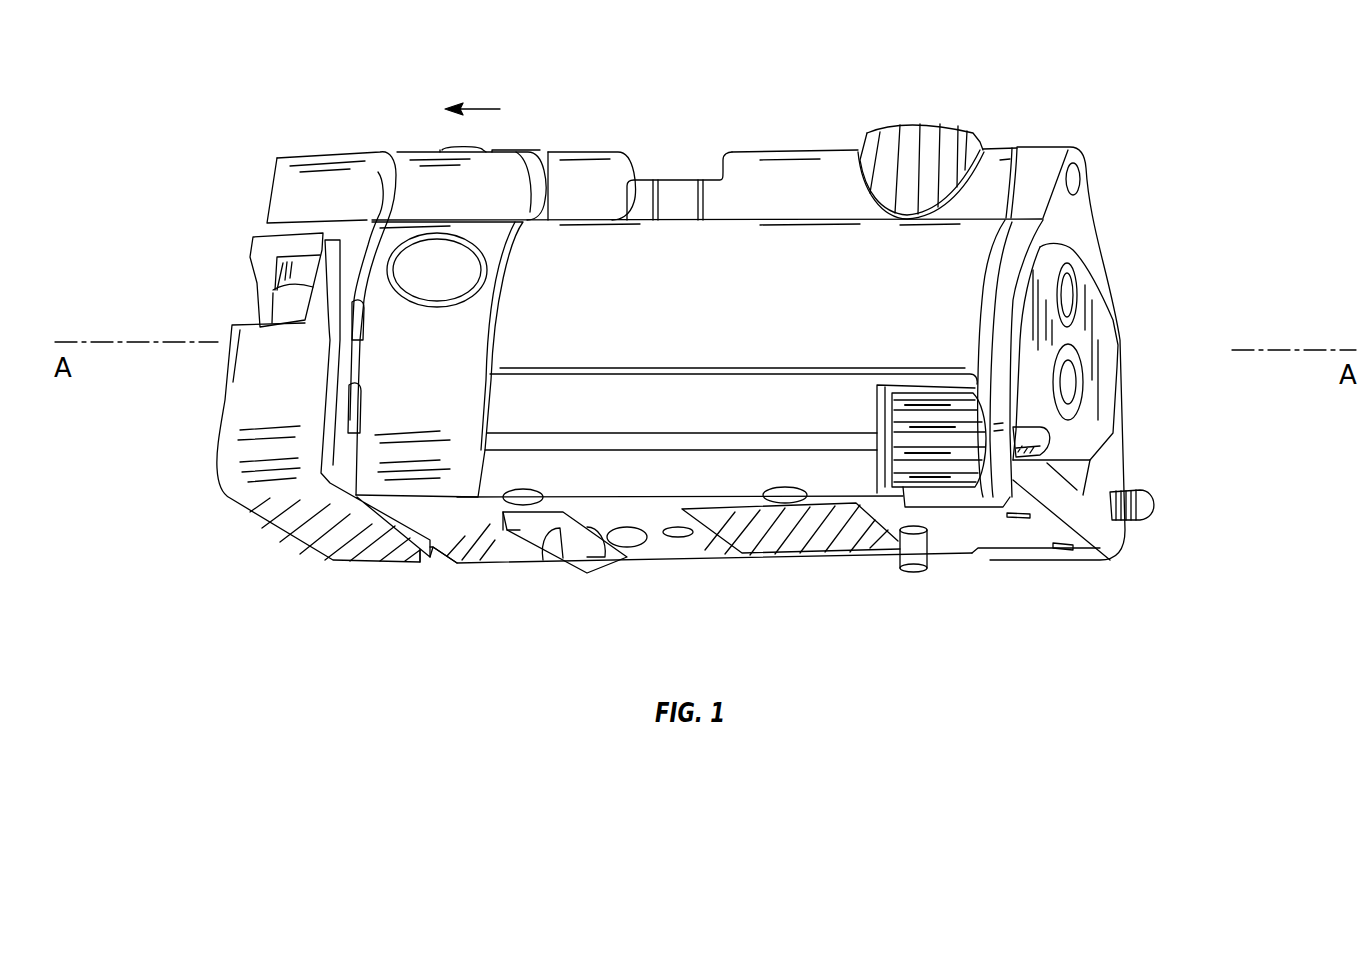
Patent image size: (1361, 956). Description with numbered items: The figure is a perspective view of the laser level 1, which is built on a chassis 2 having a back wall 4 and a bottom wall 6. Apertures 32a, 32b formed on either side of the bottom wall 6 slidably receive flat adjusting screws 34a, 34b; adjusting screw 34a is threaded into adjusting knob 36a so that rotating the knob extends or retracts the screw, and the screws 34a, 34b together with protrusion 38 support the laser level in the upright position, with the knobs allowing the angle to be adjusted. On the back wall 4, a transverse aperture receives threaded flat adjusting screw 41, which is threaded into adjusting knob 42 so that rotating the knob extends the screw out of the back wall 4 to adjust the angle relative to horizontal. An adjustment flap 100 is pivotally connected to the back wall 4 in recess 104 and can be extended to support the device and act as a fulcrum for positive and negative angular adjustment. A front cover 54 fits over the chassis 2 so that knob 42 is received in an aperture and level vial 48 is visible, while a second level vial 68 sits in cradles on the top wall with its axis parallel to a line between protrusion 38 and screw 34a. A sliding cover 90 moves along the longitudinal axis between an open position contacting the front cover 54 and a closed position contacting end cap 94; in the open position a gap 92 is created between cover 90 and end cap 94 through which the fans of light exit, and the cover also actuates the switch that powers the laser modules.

The laser level 1 is at (343, 643).
The chassis 2 is at (1100, 258).
The back wall 4 is at (697, 553).
The bottom wall 6 is at (1078, 221).
The aperture 32a is at (1035, 458).
The aperture 32b is at (1122, 527).
The adjusting screw 34a is at (1040, 432).
The adjusting screw 34b is at (1152, 503).
The adjusting knob 36a is at (946, 470).
The protrusion 38 is at (1077, 180).
The adjusting screw 41 is at (908, 562).
The adjusting knob 42 is at (893, 140).
The level vial 48 is at (643, 190).
The front cover 54 is at (585, 250).
The level vial 68 is at (278, 306).
The sliding cover 90 is at (430, 178).
The gap 92 is at (457, 568).
The end cap 94 is at (288, 193).
The adjustment flap 100 is at (577, 577).
The recess 104 is at (612, 552).